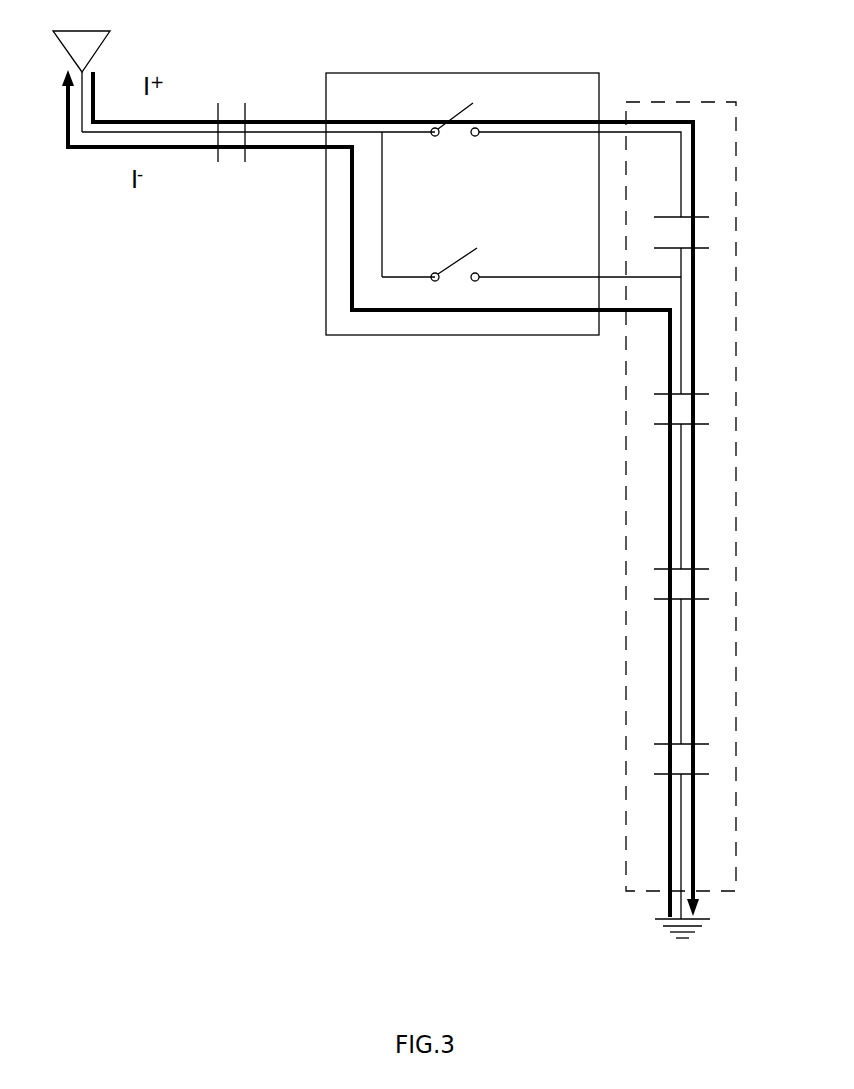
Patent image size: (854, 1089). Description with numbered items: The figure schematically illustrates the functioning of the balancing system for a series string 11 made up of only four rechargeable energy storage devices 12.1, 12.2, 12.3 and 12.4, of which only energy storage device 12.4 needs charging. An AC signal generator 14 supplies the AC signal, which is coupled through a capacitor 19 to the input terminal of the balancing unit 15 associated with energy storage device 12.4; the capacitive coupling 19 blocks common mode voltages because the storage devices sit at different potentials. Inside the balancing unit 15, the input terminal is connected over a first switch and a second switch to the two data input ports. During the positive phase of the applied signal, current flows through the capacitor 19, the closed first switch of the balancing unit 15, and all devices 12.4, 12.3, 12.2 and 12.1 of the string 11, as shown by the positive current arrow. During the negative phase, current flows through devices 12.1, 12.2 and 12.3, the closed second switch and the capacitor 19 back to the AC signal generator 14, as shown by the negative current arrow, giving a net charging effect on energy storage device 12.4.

The AC signal generator 14 is at (81, 0).
The capacitor 19 is at (231, 119).
The balancing unit 15 is at (462, 184).
The series string 11 is at (707, 496).
The energy storage device 12.1 is at (721, 759).
The energy storage device 12.2 is at (721, 584).
The energy storage device 12.3 is at (721, 409).
The energy storage device 12.4 is at (721, 232).